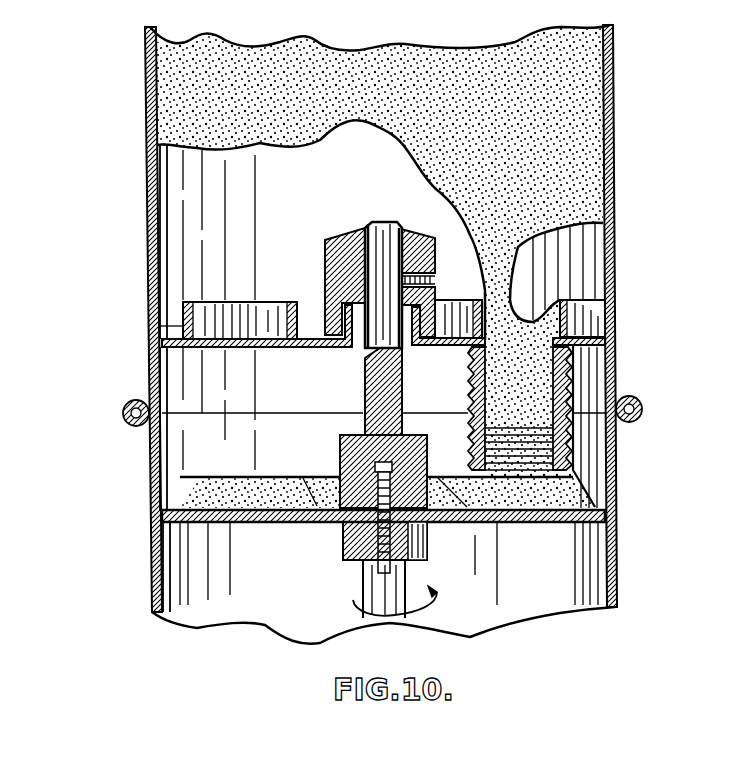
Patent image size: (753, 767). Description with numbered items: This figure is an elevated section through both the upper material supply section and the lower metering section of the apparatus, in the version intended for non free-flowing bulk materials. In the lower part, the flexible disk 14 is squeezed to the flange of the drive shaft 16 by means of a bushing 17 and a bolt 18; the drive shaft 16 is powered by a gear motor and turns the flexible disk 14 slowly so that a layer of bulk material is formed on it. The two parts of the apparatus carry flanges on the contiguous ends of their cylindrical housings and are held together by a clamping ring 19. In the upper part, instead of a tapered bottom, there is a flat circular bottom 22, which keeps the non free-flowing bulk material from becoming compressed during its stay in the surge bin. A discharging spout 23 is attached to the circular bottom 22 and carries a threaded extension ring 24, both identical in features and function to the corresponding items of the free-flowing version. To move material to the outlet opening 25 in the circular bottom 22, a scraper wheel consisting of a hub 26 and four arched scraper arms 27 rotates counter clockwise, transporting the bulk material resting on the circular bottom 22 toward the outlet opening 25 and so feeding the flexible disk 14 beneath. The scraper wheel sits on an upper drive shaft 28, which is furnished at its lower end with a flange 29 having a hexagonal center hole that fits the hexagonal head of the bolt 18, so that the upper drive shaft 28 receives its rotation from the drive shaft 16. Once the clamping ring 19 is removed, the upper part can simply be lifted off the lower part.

The flexible disk 14 is at (594, 521).
The drive shaft 16 is at (367, 580).
The bushing 17 is at (343, 548).
The bolt 18 is at (373, 490).
The clamping ring 19 is at (122, 411).
The circular bottom 22 is at (575, 346).
The discharging spout 23 is at (608, 366).
The threaded extension ring 24 is at (609, 451).
The outlet opening 25 is at (523, 337).
The hub 26 is at (328, 238).
The arched scraper arms 27 is at (150, 330).
The drive shaft 28 is at (390, 227).
The flange 29 is at (343, 445).